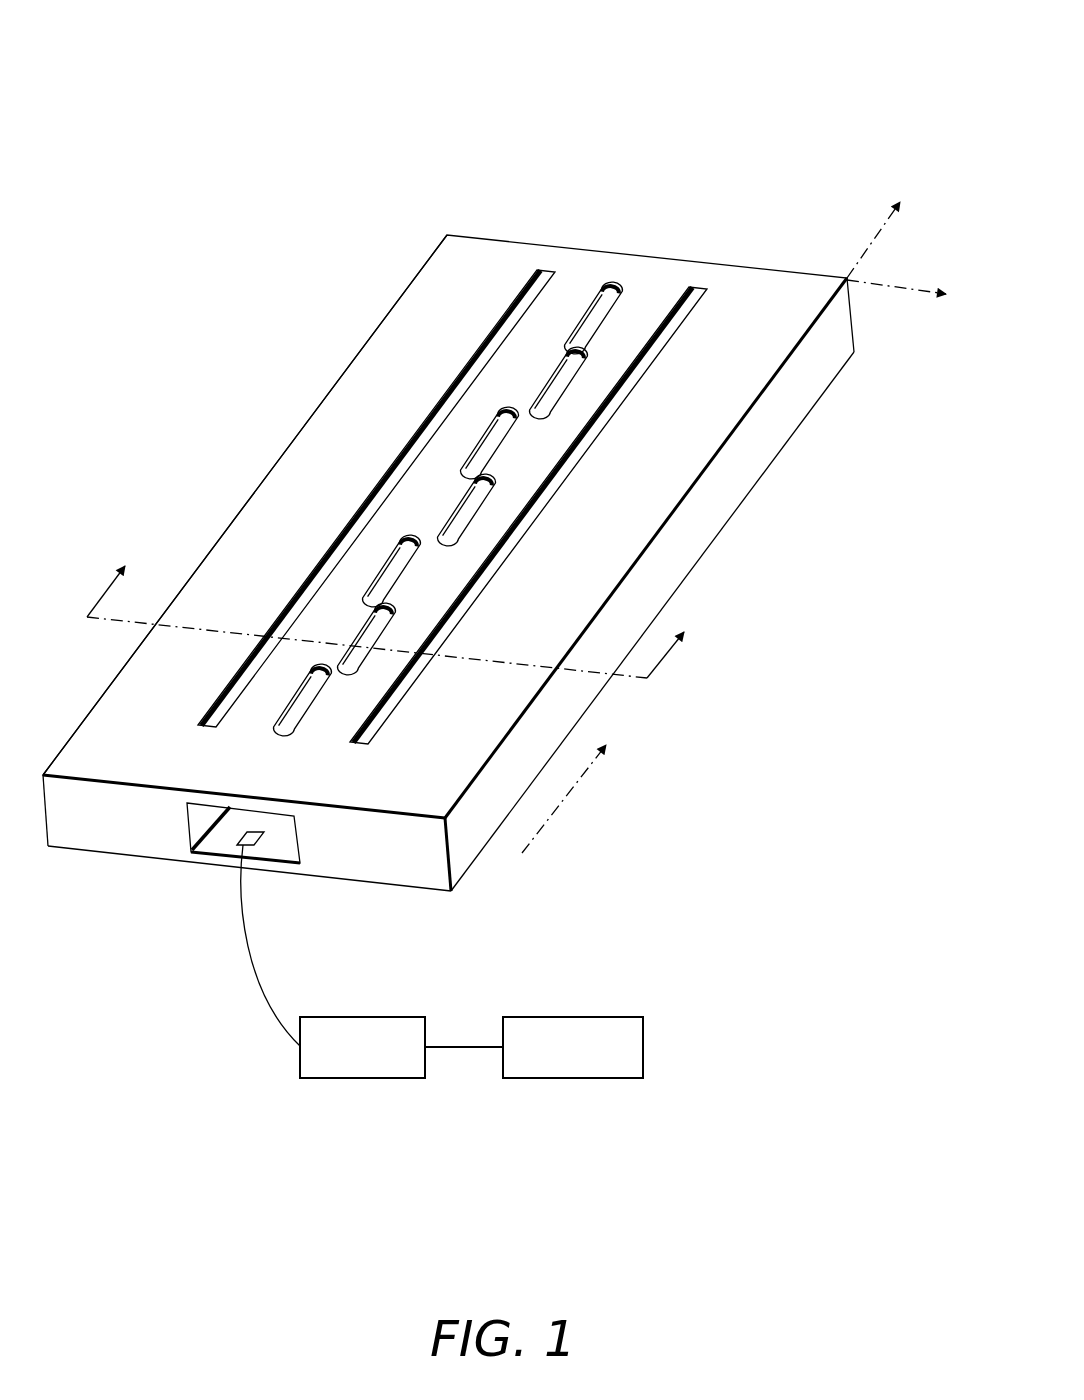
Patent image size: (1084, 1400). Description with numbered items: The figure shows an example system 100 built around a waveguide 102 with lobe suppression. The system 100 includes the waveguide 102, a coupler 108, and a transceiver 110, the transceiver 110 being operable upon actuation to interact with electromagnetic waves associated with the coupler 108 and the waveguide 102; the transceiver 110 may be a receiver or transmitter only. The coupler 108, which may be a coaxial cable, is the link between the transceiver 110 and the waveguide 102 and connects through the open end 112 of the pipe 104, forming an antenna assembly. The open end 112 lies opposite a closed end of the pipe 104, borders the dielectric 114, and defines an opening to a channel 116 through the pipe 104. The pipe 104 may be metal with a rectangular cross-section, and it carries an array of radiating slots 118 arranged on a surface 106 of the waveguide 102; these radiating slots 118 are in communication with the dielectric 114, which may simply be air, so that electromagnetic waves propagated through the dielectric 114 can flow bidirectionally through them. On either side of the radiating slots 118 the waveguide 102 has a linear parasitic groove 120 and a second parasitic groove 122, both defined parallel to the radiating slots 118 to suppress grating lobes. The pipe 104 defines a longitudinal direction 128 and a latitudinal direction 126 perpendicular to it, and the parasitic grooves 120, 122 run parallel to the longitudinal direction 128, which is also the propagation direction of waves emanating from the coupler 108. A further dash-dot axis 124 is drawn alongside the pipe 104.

The system 100 is at (172, 27).
The waveguide 102 is at (358, 178).
The pipe 104 is at (444, 230).
The surface 106 is at (428, 289).
The coupler 108 is at (401, 1047).
The transceiver 110 is at (573, 1047).
The open end 112 is at (355, 863).
The dielectric 114 is at (310, 707).
The channel 116 is at (177, 804).
The radiating slots 118 is at (289, 751).
The parasitic groove 120 is at (361, 773).
The second parasitic groove 122 is at (209, 749).
The longitudinal axis 124 is at (550, 818).
The latitudinal direction 126 is at (858, 288).
The longitudinal direction 128 is at (873, 237).